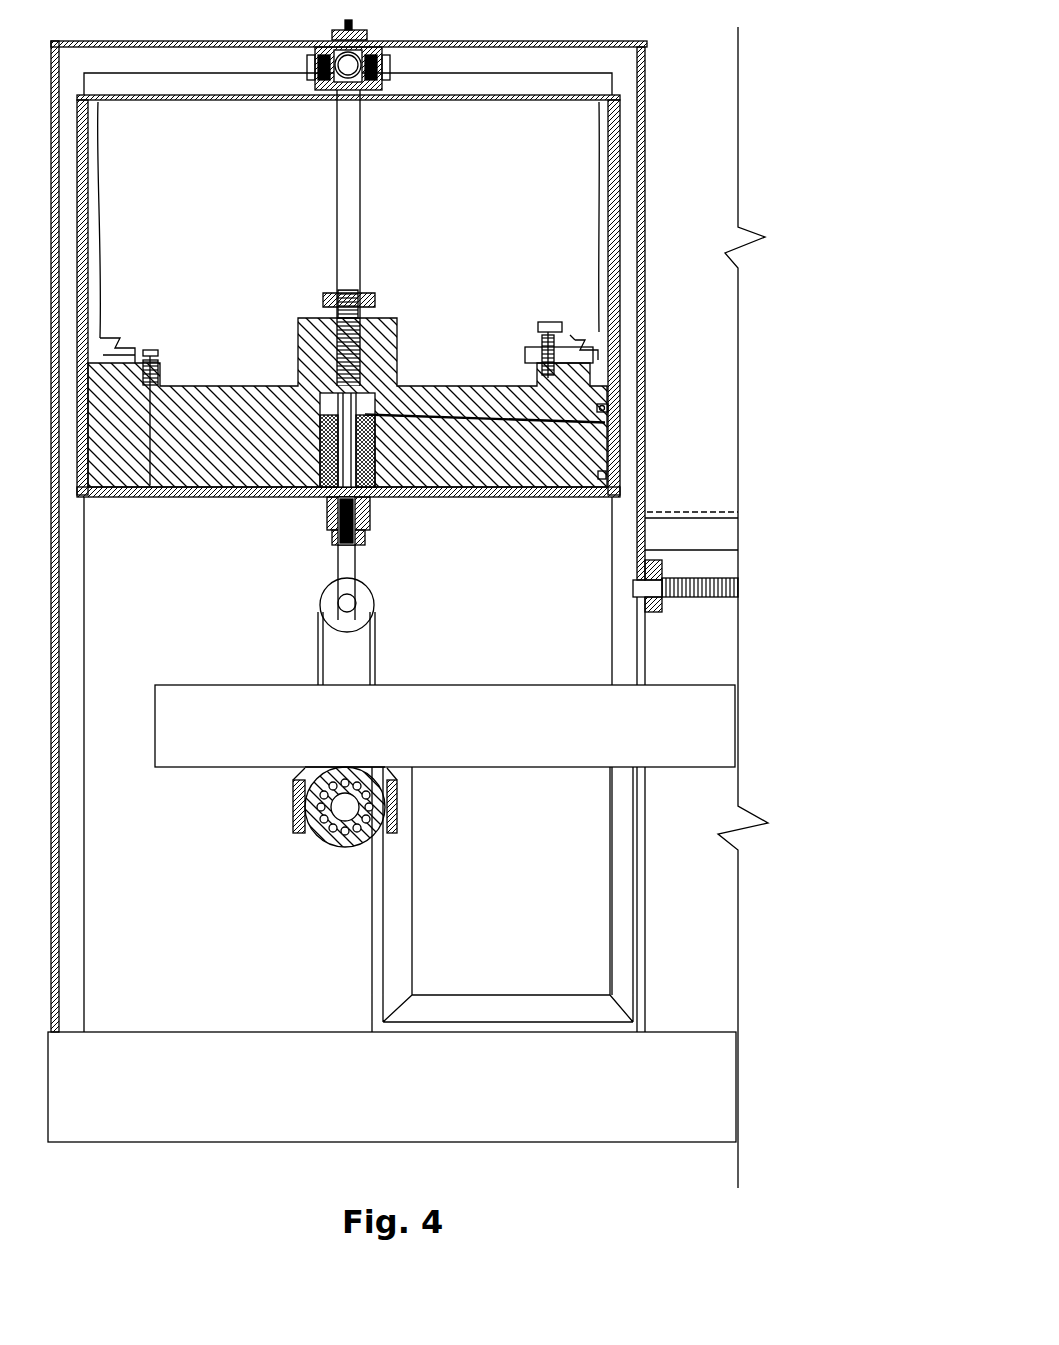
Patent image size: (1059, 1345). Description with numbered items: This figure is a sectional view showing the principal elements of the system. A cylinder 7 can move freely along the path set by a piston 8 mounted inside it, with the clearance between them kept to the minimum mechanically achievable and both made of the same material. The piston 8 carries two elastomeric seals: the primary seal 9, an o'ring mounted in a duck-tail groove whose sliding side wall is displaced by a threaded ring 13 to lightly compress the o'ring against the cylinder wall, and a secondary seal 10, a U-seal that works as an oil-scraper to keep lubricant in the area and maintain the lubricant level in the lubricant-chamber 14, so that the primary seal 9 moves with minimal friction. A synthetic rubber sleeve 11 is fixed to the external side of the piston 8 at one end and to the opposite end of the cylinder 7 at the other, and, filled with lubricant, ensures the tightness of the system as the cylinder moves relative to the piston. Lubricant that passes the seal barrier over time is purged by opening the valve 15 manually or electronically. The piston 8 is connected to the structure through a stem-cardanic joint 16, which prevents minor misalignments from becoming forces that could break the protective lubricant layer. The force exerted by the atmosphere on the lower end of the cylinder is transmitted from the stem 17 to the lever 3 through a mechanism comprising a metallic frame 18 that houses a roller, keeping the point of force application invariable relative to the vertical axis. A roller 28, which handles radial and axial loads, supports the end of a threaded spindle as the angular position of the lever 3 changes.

The lever 3 is at (490, 745).
The cylinder 7 is at (452, 497).
The piston 8 is at (450, 386).
The elastomeric seal 9 is at (606, 408).
The secondary seal 10 is at (606, 475).
The synthetic rubber sleeve 11 is at (598, 178).
The threaded ring 13 is at (530, 347).
The lubricant-chamber 14 is at (385, 420).
The valve 15 is at (165, 367).
The stem-cardanic joint 16 is at (400, 63).
The stem 17 is at (338, 557).
The metallic frame 18 is at (293, 825).
The roller 28 is at (657, 614).